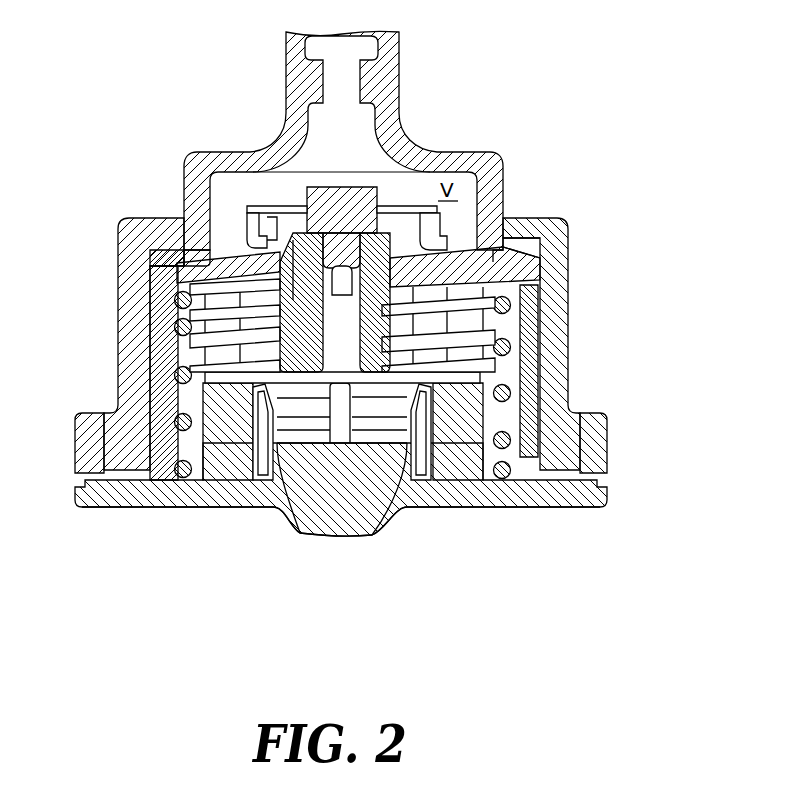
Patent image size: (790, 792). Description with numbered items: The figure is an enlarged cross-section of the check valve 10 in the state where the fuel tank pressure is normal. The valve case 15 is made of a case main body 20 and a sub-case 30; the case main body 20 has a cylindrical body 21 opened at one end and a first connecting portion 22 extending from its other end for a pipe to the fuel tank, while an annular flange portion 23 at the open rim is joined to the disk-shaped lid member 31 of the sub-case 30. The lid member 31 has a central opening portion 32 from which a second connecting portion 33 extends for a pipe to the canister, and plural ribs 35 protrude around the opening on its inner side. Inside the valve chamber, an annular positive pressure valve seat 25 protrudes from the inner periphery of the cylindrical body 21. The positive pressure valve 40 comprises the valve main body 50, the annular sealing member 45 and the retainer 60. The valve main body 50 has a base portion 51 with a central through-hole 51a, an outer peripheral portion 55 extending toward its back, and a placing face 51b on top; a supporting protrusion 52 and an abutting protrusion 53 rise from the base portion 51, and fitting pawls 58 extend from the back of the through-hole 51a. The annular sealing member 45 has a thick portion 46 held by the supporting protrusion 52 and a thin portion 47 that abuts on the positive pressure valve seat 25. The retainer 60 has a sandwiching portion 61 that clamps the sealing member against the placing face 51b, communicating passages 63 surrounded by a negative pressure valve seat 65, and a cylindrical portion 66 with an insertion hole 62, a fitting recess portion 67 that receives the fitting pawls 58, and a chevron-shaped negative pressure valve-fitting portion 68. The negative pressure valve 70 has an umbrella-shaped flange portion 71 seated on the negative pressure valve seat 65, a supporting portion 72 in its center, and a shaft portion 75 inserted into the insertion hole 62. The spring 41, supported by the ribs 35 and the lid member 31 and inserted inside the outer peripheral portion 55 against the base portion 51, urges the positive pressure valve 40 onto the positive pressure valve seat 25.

The check valve 10 is at (214, 123).
The valve case 15 is at (711, 417).
The case main body 20 is at (614, 445).
The cylindrical body 21 is at (123, 313).
The first connecting portion 22 is at (401, 48).
The annular flange portion 23 is at (80, 446).
The positive pressure valve seat 25 is at (200, 252).
The sub-case 30 is at (614, 497).
The lid member 31 is at (93, 505).
The opening portion 32 is at (384, 500).
The second connecting portion 33 is at (311, 532).
The ribs 35 is at (459, 470).
The positive pressure valve 40 is at (652, 180).
The spring 41 is at (503, 483).
The annular sealing member 45 is at (510, 254).
The thick portion 46 is at (200, 247).
The thin portion 47 is at (192, 262).
The valve main body 50 is at (548, 380).
The base portion 51 is at (190, 292).
The through-hole 51a is at (374, 450).
The placing face 51b is at (543, 272).
The supporting protrusion 52 is at (255, 238).
The abutting protrusion 53 is at (228, 258).
The outer peripheral portion 55 is at (527, 397).
The fitting pawls 58 is at (262, 398).
The retainer 60 is at (462, 226).
The sandwiching portion 61 is at (455, 238).
The insertion hole 62 is at (300, 312).
The communicating passages 63 is at (290, 206).
The negative pressure valve seat 65 is at (446, 213).
The cylindrical portion 66 is at (322, 400).
The fitting recess portion 67 is at (312, 400).
The negative pressure valve-fitting portion 68 is at (336, 450).
The negative pressure valve 70 is at (376, 173).
The flange portion 71 is at (415, 206).
The supporting portion 72 is at (310, 186).
The shaft portion 75 is at (347, 450).